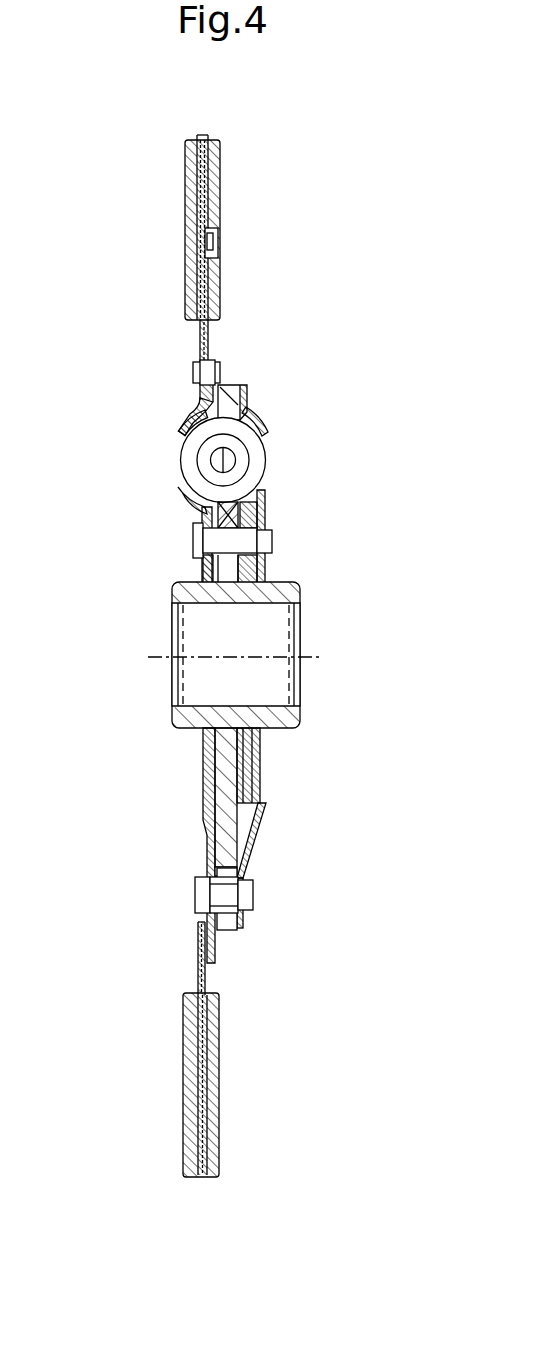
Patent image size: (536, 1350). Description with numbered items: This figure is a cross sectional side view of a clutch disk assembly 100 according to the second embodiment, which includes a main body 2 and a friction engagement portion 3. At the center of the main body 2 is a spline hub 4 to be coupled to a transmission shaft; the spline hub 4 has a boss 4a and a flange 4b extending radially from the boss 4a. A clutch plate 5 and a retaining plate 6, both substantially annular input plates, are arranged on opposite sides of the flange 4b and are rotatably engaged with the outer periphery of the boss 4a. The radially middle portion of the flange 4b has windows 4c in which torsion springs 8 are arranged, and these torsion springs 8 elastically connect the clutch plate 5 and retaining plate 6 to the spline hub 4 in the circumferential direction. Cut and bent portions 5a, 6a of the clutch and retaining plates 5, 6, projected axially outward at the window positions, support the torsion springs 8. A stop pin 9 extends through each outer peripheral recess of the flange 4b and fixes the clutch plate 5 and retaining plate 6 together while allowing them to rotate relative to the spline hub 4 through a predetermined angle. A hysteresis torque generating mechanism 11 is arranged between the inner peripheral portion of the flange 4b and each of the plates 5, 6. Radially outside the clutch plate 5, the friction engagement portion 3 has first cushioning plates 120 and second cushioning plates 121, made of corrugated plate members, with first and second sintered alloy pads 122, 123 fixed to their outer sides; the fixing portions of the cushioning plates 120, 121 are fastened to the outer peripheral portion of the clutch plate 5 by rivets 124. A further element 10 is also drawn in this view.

The clutch disk assembly 100 is at (320, 333).
The friction engagement portion 3 is at (227, 193).
The first sintered alloy pad 122 is at (193, 155).
The second sintered alloy pad 123 is at (213, 153).
The first cushioning plate 120 is at (200, 332).
The second cushioning plate 121 is at (207, 340).
The rivet 124 is at (220, 373).
The clutch plate 5 is at (188, 413).
The cut and bent portion 5a is at (180, 428).
The retaining plate 6 is at (247, 412).
The cut and bent portion 6a is at (267, 433).
The torsion spring 8 is at (264, 460).
The window 4c is at (216, 420).
The connecting pin 10 is at (198, 533).
The main body 2 is at (302, 586).
The spline hub 4 is at (66, 730).
The boss 4a is at (172, 725).
The flange 4b is at (205, 770).
The hysteresis torque generating mechanism 11 is at (250, 812).
The stop pin 9 is at (223, 892).